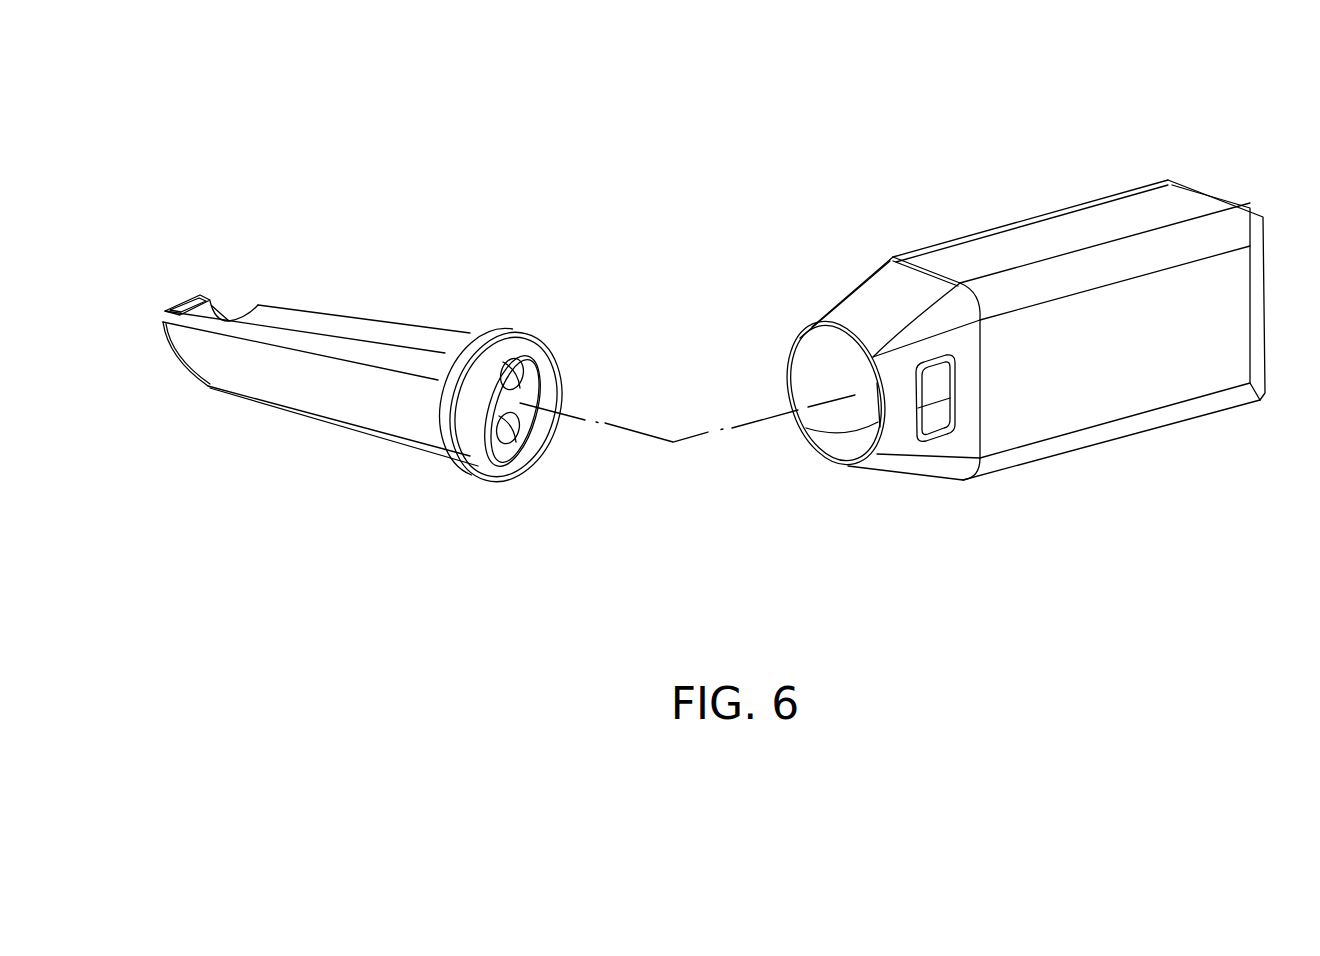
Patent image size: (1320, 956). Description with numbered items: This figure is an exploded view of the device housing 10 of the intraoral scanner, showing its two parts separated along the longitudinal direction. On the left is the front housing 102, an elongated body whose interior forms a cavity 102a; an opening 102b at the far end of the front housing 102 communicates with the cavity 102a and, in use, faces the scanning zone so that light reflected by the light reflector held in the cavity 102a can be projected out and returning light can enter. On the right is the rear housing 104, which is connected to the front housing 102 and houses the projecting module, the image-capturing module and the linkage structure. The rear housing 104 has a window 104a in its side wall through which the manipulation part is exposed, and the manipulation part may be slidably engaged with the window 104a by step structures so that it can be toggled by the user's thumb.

The device housing 10 is at (138, 68).
The front housing 102 is at (370, 330).
The cavity 102a is at (503, 433).
The opening 102b is at (222, 302).
The rear housing 104 is at (977, 248).
The window 104a is at (947, 393).